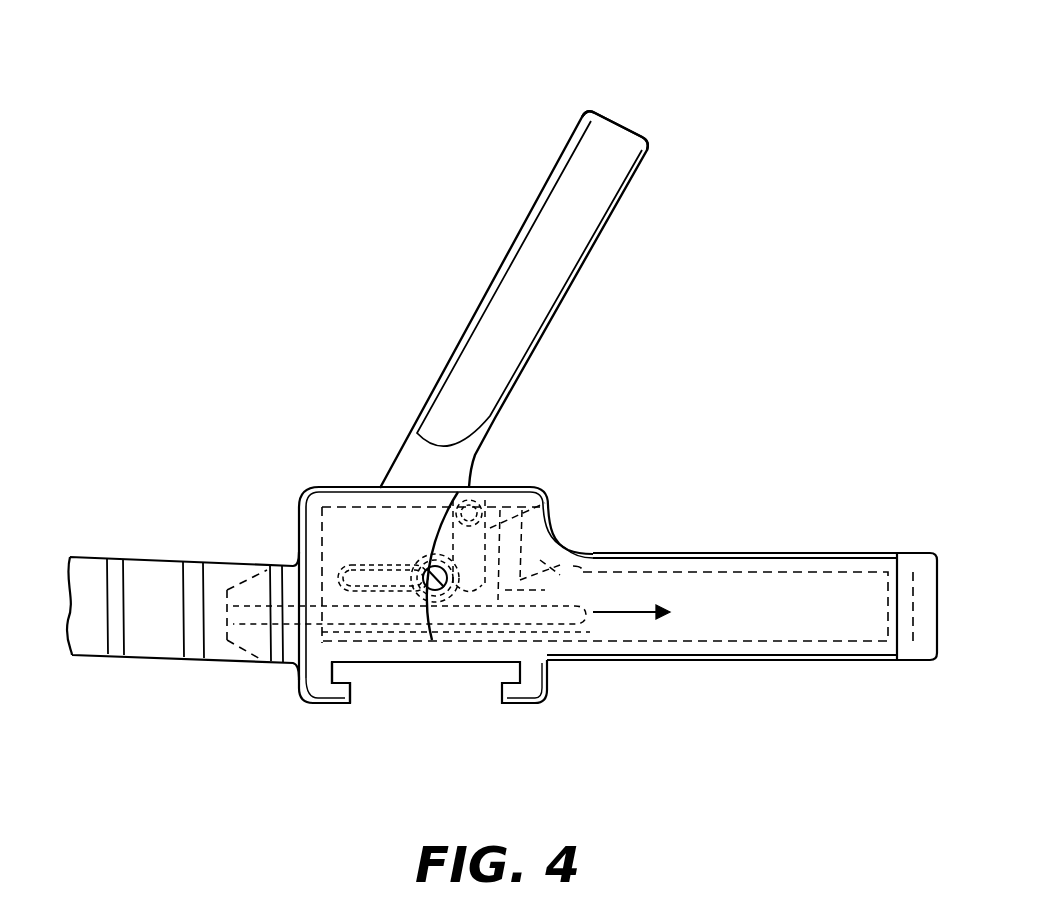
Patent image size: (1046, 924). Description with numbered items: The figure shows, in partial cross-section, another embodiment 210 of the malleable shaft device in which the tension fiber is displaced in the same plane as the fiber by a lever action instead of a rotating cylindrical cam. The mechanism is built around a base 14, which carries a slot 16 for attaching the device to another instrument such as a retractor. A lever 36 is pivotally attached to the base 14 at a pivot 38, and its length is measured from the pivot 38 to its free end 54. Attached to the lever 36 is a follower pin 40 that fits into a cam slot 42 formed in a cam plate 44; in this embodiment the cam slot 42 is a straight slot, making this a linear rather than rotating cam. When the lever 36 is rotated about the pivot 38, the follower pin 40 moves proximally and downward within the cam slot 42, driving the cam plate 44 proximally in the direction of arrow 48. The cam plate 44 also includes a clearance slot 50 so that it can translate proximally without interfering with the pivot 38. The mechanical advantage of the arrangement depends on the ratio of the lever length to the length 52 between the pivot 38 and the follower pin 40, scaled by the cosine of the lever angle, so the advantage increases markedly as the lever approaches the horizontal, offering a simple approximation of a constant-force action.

The embodiment 210 is at (218, 252).
The base 14 is at (302, 495).
The slot 16 is at (338, 672).
The lever 36 is at (537, 204).
The free end 54 is at (621, 124).
The follower pin 40 is at (458, 492).
The pivot 38 is at (432, 640).
The clearance slot 50 is at (366, 573).
The length 52 is at (545, 502).
The cam slot 42 is at (470, 600).
The cam plate 44 is at (578, 547).
The arrow 48 is at (640, 612).